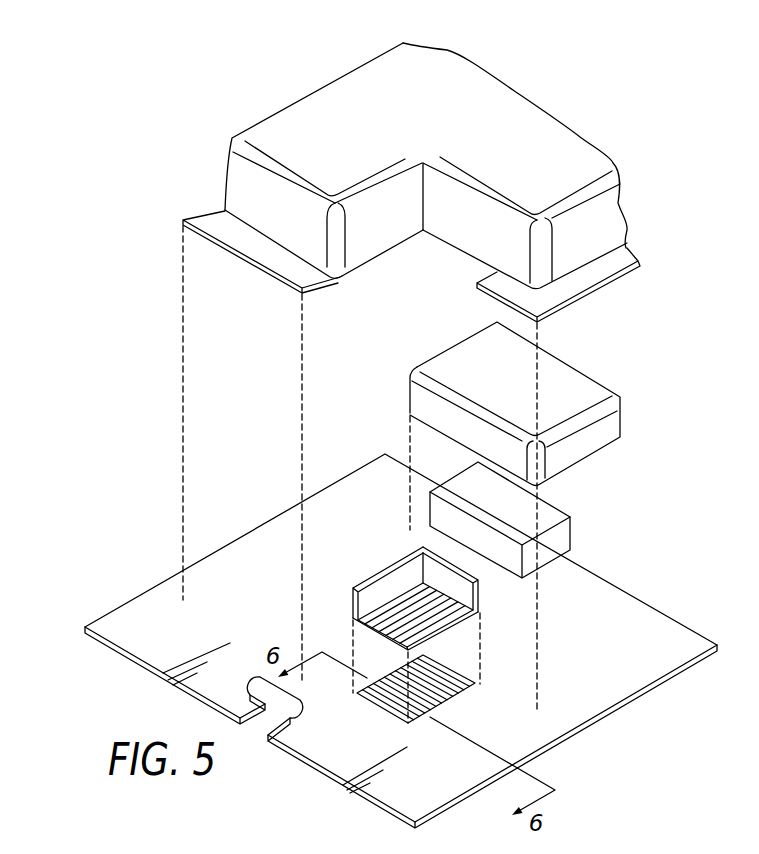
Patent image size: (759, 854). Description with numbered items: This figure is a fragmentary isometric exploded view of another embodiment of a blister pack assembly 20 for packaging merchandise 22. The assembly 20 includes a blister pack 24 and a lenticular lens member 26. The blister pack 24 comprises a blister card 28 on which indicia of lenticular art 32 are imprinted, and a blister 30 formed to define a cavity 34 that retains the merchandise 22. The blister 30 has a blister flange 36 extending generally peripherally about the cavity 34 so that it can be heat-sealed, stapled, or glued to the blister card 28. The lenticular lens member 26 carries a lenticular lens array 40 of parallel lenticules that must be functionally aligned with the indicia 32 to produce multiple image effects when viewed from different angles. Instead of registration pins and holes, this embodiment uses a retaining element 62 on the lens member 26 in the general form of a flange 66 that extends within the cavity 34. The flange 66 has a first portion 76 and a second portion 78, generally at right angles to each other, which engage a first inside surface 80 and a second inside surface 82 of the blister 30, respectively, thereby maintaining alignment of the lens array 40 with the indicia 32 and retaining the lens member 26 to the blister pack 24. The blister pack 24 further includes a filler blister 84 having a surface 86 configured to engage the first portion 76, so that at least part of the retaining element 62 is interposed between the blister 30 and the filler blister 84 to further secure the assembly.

The blister pack assembly 20 is at (236, 79).
The merchandise 22 is at (567, 535).
The blister pack 24 is at (247, 69).
The lenticular lens member 26 is at (402, 530).
The blister card 28 is at (552, 750).
The blister 30 is at (232, 140).
The indicia of lenticular art 32 is at (430, 694).
The cavity 34 is at (522, 113).
The blister flange 36 is at (267, 252).
The lenticular lens array 40 is at (440, 605).
The retaining element 62 is at (391, 542).
The flange 66 is at (384, 553).
The first portion 76 is at (458, 580).
The second portion 78 is at (365, 598).
The first inside surface 80 is at (458, 230).
The second inside surface 82 is at (390, 222).
The filler blister 84 is at (597, 358).
The surface 86 is at (420, 400).